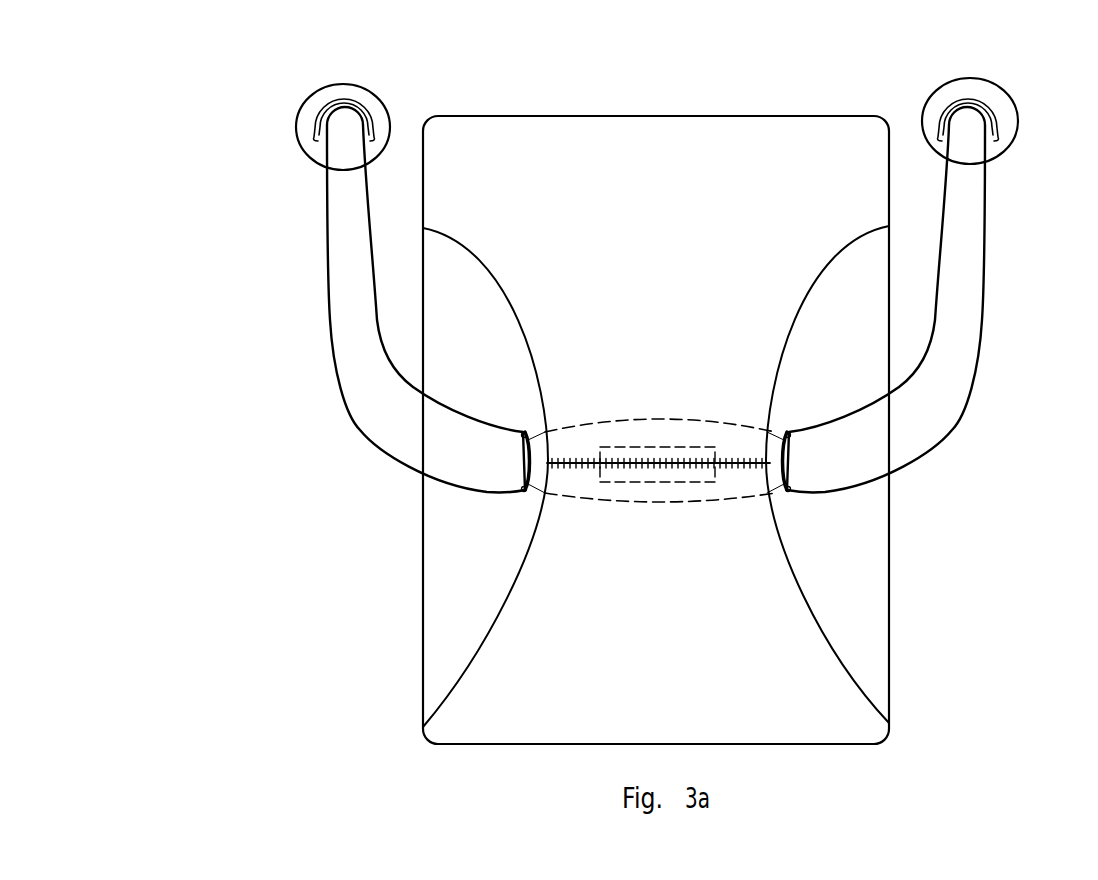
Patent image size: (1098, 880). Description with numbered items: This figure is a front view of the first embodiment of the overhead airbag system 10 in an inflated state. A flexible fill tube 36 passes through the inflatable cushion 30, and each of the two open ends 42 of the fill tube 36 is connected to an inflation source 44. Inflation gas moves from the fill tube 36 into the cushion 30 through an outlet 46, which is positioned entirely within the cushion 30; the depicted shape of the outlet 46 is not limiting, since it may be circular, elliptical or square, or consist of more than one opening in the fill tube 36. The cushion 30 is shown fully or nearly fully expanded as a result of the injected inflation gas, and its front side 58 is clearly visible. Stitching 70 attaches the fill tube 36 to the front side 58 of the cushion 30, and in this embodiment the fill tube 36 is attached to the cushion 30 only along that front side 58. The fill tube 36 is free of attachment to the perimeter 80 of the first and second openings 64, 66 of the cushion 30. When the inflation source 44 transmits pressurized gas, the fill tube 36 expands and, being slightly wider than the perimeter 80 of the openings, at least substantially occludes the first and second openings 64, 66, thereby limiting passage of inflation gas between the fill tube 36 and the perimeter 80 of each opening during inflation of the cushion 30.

The overhead airbag system 10 is at (213, 122).
The inflatable cushion 30 is at (661, 209).
The fill tube 36 is at (370, 383).
The open ends 42 is at (333, 137).
The inflation source 44 is at (320, 104).
The outlet 46 is at (640, 487).
The front side 58 is at (762, 580).
The first opening 64 is at (773, 493).
The second opening 66 is at (545, 493).
The stitching 70 is at (728, 460).
The perimeter 80 is at (547, 432).